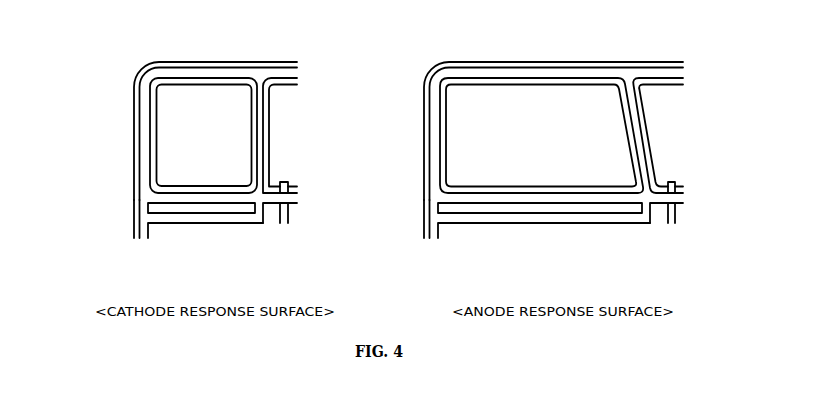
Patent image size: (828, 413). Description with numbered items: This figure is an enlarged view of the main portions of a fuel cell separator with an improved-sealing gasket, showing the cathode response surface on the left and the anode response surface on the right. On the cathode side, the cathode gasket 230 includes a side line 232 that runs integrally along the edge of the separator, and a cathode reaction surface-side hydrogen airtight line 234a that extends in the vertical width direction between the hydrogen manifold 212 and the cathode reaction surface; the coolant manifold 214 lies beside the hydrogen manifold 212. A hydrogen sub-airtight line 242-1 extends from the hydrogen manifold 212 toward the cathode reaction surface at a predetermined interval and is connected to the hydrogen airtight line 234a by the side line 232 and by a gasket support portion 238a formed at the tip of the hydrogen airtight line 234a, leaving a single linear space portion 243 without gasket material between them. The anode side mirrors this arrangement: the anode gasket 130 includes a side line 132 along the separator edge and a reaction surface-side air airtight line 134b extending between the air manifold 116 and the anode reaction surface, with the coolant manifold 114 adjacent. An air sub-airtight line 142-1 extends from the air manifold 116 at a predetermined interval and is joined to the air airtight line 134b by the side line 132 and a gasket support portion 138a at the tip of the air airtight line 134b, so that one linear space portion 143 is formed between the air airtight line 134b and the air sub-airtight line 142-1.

The cathode gasket 230 is at (130, 127).
The side line 232 is at (139, 237).
The hydrogen manifold 212 is at (190, 97).
The cathode reaction surface-side hydrogen airtight line 234a is at (183, 197).
The coolant manifold 214 is at (281, 97).
The space portion 243 is at (173, 208).
The hydrogen sub-airtight line 242-1 is at (217, 217).
The gasket support portion 238a is at (261, 205).
The anode gasket 130 is at (416, 112).
The side line 132 is at (432, 230).
The air manifold 116 is at (537, 97).
The reaction surface-side air airtight line 134b is at (500, 197).
The coolant manifold 114 is at (665, 97).
The space portion 143 is at (477, 208).
The air sub-airtight line 142-1 is at (559, 217).
The gasket support portion 138a is at (647, 208).